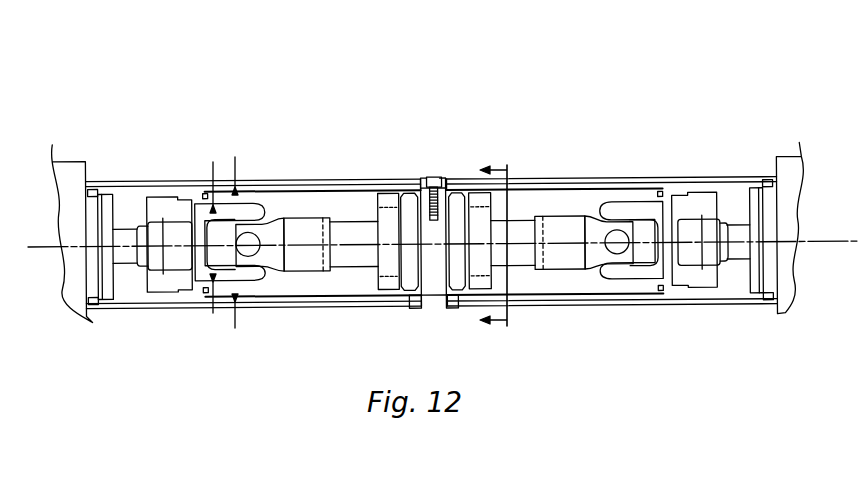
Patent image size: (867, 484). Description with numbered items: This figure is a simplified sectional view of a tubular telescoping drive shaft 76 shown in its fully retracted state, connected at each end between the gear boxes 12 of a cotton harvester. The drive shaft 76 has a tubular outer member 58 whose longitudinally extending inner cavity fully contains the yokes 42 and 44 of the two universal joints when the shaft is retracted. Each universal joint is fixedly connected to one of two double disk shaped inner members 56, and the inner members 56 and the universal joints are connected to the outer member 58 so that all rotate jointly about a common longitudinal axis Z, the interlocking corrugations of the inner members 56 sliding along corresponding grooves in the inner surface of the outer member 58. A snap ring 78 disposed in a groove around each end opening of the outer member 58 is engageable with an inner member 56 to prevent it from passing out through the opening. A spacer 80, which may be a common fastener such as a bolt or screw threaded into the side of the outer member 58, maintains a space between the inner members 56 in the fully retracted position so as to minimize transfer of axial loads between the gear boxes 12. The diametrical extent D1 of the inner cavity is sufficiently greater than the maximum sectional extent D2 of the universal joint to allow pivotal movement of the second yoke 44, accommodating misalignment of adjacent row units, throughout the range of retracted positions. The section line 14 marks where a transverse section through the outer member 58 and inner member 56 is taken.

The gear box 12 is at (79, 154).
The section line 14- 14 is at (500, 247).
The yoke 42 is at (286, 213).
The second yoke 44 is at (262, 202).
The inner member 56 is at (457, 303).
The outer member 58 is at (578, 303).
The telescoping drive shaft 76 is at (127, 312).
The snap ring 78 is at (192, 290).
The spacer 80 is at (433, 181).
The sectional extent of inner cavity D1 is at (235, 318).
The maximum sectional extent of universal joint D2 is at (213, 313).
The longitudinal axis Z is at (835, 240).